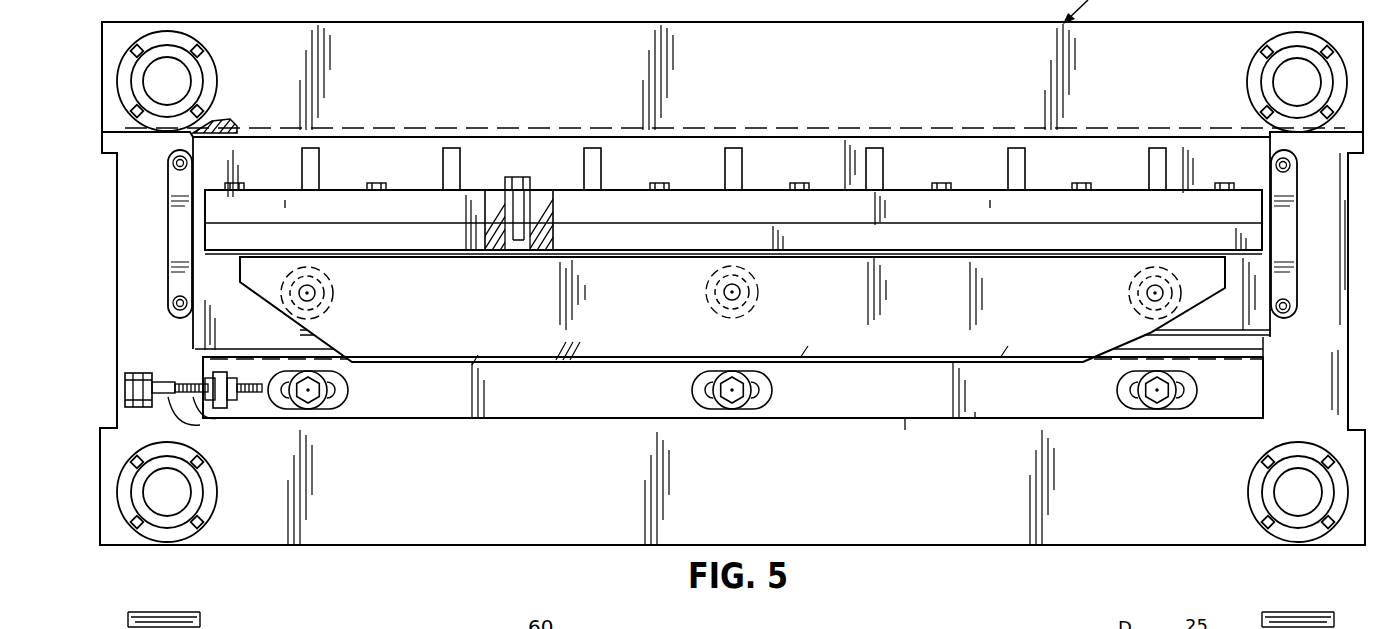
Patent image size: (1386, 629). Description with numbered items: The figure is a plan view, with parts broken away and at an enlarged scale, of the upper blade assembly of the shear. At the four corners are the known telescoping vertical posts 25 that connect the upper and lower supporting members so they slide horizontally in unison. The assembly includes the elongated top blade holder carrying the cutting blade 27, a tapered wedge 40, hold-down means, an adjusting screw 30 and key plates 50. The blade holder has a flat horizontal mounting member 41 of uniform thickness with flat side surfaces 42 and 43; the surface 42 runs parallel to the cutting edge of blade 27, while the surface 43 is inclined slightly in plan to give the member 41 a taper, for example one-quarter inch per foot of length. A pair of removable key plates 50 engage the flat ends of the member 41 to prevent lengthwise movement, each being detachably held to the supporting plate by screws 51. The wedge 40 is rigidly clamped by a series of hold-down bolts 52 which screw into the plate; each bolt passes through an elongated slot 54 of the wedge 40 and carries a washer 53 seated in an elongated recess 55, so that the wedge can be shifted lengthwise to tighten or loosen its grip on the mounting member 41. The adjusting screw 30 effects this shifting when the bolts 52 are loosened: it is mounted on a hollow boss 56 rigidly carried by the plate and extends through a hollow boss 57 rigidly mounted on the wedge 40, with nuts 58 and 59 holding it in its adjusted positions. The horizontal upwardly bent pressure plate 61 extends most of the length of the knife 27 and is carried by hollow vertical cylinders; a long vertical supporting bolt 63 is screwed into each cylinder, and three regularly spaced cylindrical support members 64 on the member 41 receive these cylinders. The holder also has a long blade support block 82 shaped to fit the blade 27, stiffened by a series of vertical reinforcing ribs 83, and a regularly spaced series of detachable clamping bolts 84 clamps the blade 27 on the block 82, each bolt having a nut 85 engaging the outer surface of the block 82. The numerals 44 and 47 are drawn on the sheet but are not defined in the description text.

The telescoping vertical posts 25 is at (156, 91).
The cutting blade 27 is at (370, 240).
The adjusting screw 30 is at (193, 404).
The tapered wedge 40 is at (606, 418).
The mounting member 41 is at (207, 320).
The side surface 42 is at (222, 128).
The side surface 43 is at (203, 352).
The support plate portion 44 is at (910, 426).
The support plate edge 47 is at (978, 412).
The key plates 50 is at (170, 240).
The screws 51 is at (172, 165).
The hold-down bolts 52 is at (313, 398).
The washer 53 is at (737, 408).
The elongated slot 54 is at (338, 396).
The elongated recess 55 is at (346, 381).
The hollow boss 56 is at (125, 404).
The hollow boss 57 is at (222, 372).
The nut 58 is at (210, 401).
The nut 59 is at (232, 401).
The pressure plate 61 is at (268, 287).
The supporting bolt 63 is at (315, 293).
The cylindrical support member 64 is at (757, 287).
The blade support block 82 is at (288, 200).
The reinforcing ribs 83 is at (318, 170).
The clamping bolts 84 is at (500, 250).
The nut 85 is at (376, 183).